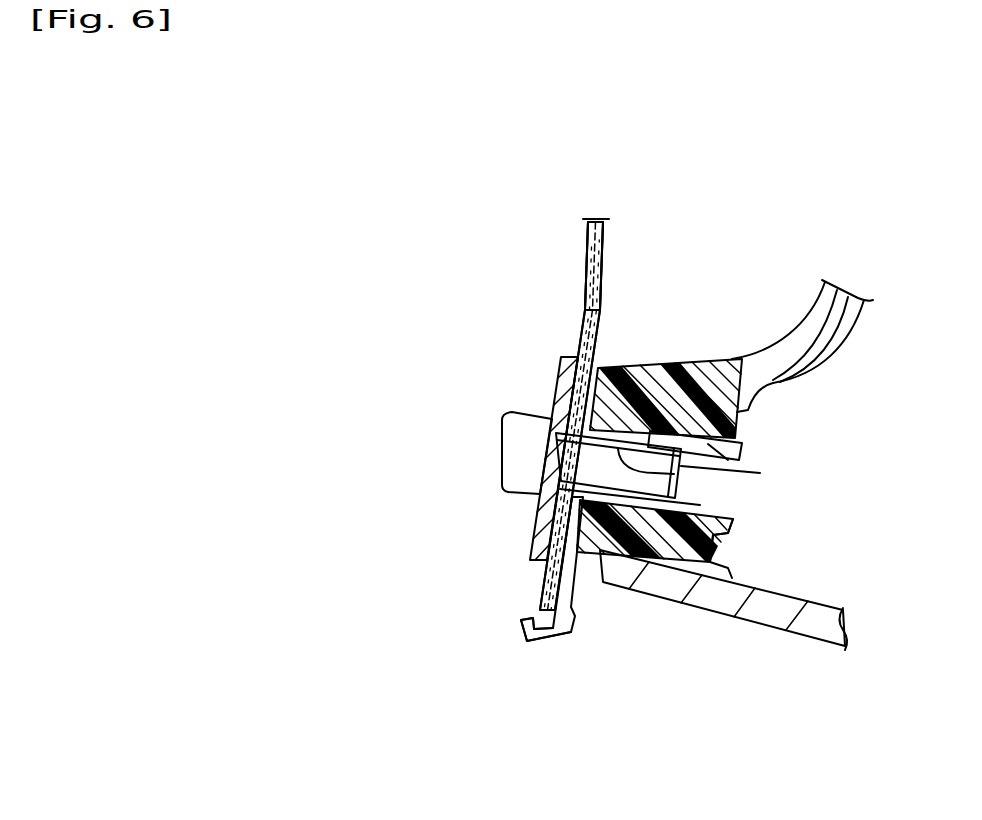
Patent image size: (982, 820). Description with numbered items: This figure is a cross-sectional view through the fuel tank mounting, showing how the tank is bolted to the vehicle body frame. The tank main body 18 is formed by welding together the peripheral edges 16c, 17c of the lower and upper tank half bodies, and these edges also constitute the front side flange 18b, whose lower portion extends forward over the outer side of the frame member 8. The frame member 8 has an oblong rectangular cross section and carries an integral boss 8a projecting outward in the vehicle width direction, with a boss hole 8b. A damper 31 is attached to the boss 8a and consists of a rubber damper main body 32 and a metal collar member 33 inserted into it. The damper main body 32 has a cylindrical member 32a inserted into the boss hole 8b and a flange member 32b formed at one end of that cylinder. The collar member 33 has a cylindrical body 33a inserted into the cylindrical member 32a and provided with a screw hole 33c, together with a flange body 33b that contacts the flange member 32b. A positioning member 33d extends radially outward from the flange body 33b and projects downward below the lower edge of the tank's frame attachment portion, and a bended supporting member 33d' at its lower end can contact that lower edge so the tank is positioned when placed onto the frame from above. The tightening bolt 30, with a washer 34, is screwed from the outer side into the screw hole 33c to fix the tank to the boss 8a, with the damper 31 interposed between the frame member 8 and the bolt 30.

The frame member 8 is at (736, 524).
The boss 8a is at (678, 600).
The boss hole 8b is at (750, 410).
The peripheral edge of lower tank half body 16c is at (614, 245).
The peripheral edge of upper tank half body 17c is at (568, 245).
The tank main body 18 is at (583, 331).
The front side flange 18b is at (510, 122).
The tightening bolt 30 is at (503, 444).
The damper 31 is at (745, 540).
The damper main body 32 is at (640, 641).
The cylindrical member 32a is at (633, 562).
The flange member 32b is at (580, 553).
The collar member 33 is at (698, 359).
The cylindrical body 33a is at (690, 362).
The flange body 33b is at (600, 362).
The screw hole 33c is at (692, 474).
The positioning member 33d is at (533, 641).
The bended supporting member 33d' is at (486, 684).
The washer 34 is at (558, 384).